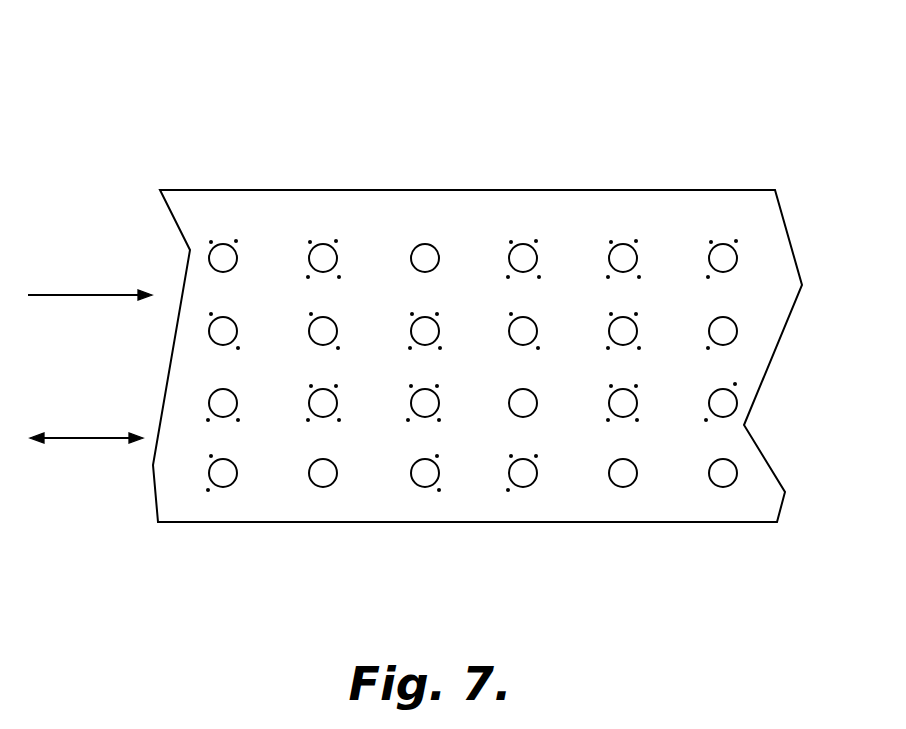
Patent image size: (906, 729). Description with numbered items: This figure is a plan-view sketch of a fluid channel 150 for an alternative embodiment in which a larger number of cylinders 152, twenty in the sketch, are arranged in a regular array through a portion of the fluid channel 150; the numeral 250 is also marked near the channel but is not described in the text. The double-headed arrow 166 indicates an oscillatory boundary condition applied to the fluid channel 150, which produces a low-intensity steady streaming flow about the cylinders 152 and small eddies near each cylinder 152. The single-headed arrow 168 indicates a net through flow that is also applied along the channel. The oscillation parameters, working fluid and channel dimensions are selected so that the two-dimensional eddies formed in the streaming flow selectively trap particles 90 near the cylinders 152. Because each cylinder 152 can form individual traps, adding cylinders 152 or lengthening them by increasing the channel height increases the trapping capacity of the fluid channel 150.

The fluid channel 150 is at (477, 310).
The plate portion 250 is at (723, 215).
The cylinders 152 is at (523, 256).
The particles 90 is at (412, 248).
The single-headed arrow 168 is at (88, 295).
The double-headed arrow 166 is at (84, 438).